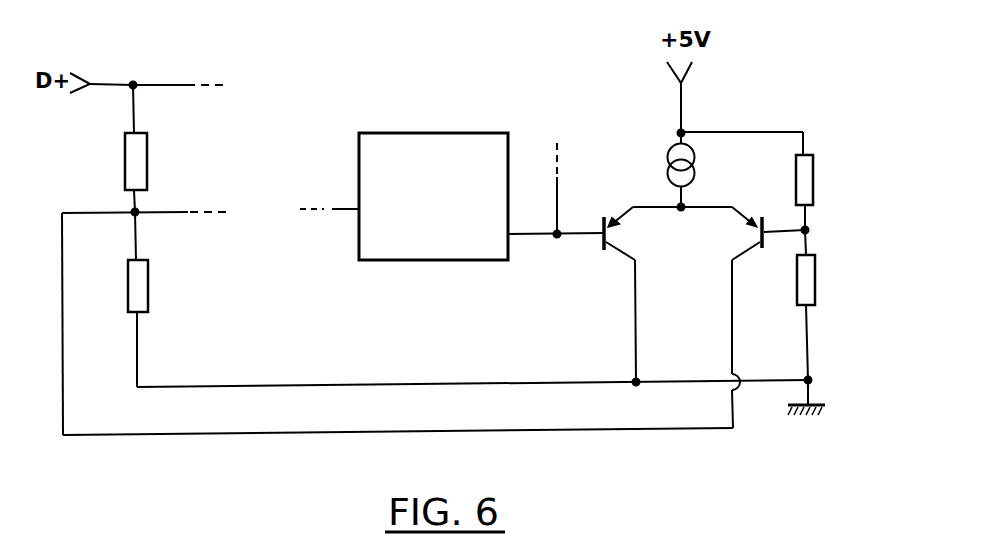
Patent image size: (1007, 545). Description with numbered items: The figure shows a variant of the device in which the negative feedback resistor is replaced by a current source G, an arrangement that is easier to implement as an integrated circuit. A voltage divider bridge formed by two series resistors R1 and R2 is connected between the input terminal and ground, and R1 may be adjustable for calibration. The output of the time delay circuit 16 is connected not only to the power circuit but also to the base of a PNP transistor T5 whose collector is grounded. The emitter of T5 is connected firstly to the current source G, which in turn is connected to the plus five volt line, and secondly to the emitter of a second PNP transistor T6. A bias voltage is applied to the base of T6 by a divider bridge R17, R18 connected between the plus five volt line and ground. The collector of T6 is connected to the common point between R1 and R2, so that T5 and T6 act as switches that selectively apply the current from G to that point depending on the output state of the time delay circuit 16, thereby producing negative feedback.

The resistor R1 is at (117, 161).
The resistor R2 is at (121, 286).
The time delay circuit 16 is at (447, 178).
The PNP transistor T5 is at (613, 222).
The PNP transistor T6 is at (749, 222).
The current source G is at (667, 165).
The resistor R17 is at (825, 180).
The resistor R18 is at (827, 280).